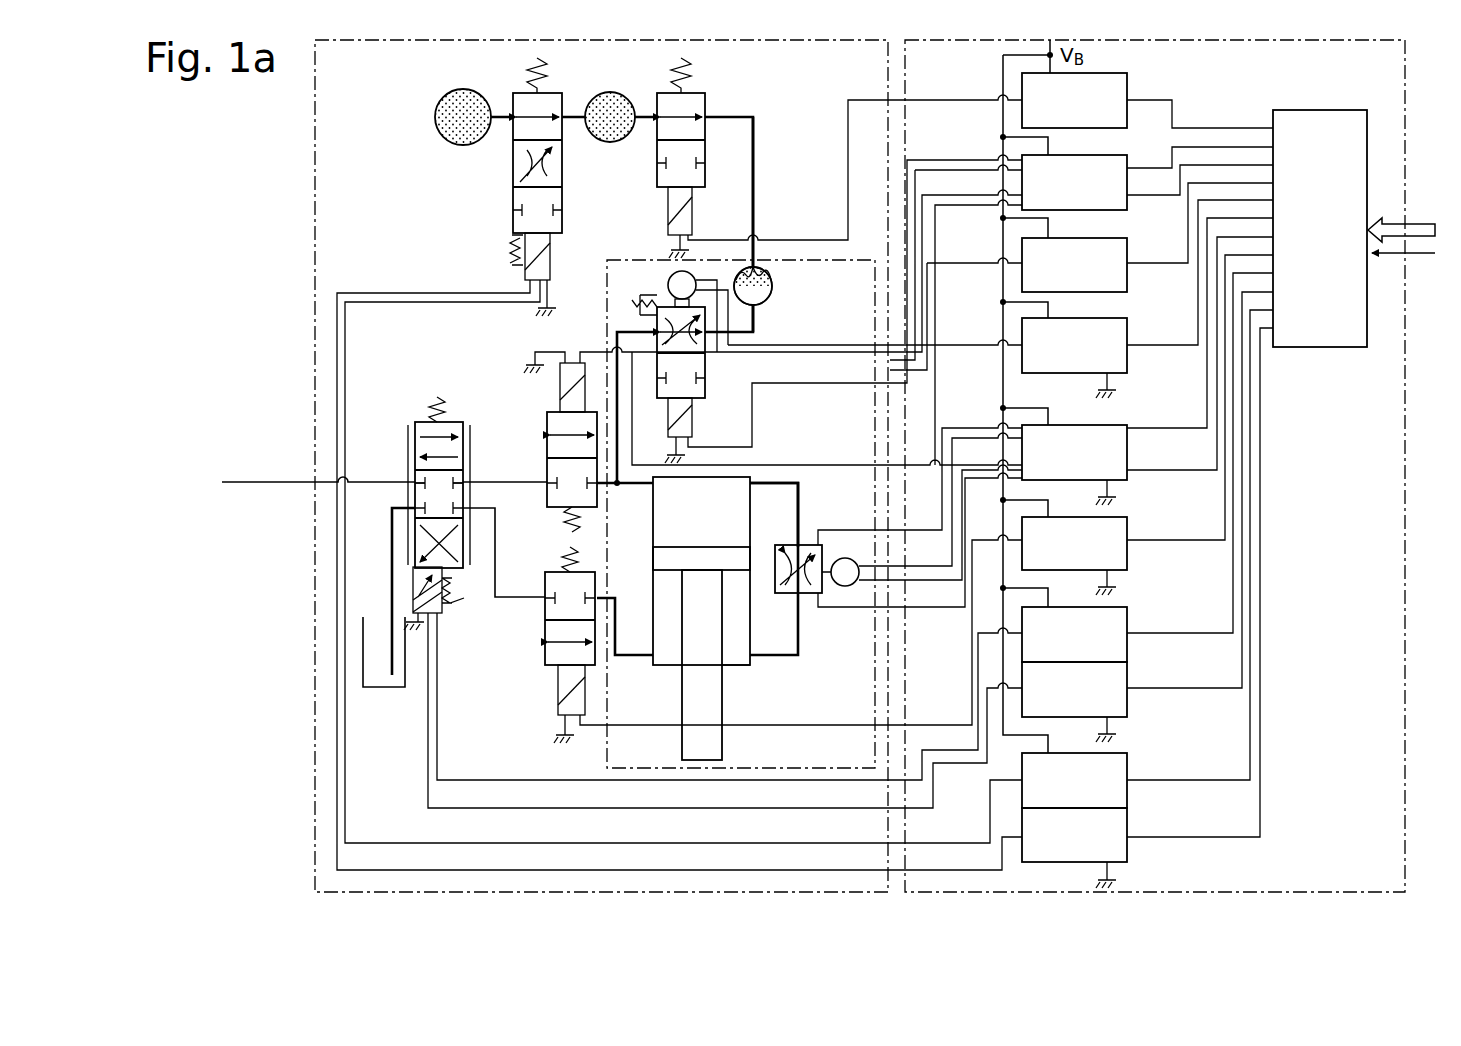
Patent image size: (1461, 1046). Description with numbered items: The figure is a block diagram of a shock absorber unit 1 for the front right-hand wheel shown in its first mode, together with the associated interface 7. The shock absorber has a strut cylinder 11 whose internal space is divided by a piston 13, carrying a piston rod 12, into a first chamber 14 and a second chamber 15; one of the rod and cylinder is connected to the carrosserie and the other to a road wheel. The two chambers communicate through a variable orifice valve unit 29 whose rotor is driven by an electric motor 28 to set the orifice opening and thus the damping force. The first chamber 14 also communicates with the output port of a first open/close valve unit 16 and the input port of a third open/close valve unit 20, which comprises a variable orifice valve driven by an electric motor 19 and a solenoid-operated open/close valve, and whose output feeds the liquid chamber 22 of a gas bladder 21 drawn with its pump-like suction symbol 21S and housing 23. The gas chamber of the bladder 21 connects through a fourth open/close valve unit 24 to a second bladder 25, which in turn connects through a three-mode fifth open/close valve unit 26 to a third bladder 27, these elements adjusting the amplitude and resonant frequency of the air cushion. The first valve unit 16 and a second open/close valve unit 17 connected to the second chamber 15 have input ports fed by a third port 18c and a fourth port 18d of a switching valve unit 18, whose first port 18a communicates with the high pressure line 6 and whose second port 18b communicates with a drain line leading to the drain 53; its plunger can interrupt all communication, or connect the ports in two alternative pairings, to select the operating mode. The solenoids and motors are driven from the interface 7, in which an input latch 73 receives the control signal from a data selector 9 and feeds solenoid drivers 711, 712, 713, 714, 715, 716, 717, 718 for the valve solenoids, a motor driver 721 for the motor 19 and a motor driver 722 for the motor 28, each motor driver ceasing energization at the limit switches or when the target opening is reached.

The shock absorber unit 1 is at (315, 232).
The high pressure line 6 is at (258, 484).
The interface 7 is at (1405, 70).
The data selector 9 is at (1458, 252).
The strut cylinder 11 is at (648, 566).
The piston rod 12 is at (682, 702).
The piston 13 is at (730, 546).
The first chamber 14 is at (758, 476).
The second chamber 15 is at (738, 666).
The first open/close valve unit 16 is at (547, 412).
The second open/close valve unit 17 is at (547, 605).
The switching valve unit 18 is at (404, 416).
The first port 18a is at (412, 482).
The second port 18b is at (412, 508).
The third port 18c is at (467, 482).
The fourth port 18d is at (466, 512).
The electric motor 19 is at (667, 272).
The third open/close valve unit 20 is at (657, 330).
The gas bladder 21 is at (770, 297).
The pump suction line 21S is at (770, 272).
The liquid chamber 22 is at (758, 318).
The pump housing 23 is at (772, 286).
The fourth open/close valve unit 24 is at (705, 190).
The second bladder 25 is at (615, 142).
The fifth open/close valve unit 26 is at (513, 194).
The third bladder 27 is at (435, 118).
The electric motor 28 is at (842, 586).
The variable orifice valve unit 29 is at (805, 598).
The drain 53 is at (385, 688).
The input latch 73 is at (1325, 347).
The solenoid driver 711 is at (1128, 77).
The solenoid driver 712 is at (1127, 238).
The solenoid driver 713 is at (1127, 318).
The solenoid driver 714 is at (1127, 517).
The solenoid driver 715 is at (1127, 607).
The solenoid driver 716 is at (1127, 672).
The solenoid driver 717 is at (1127, 753).
The solenoid driver 718 is at (1127, 870).
The motor driver 721 is at (1127, 155).
The motor driver 722 is at (1127, 425).